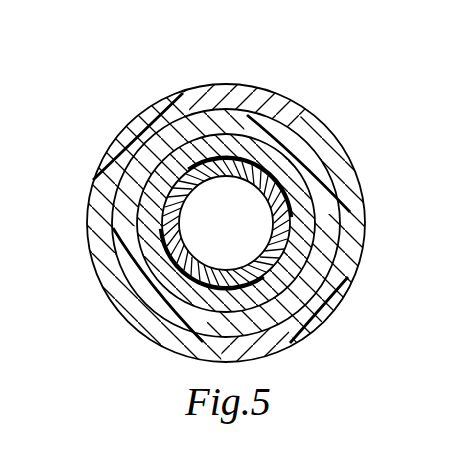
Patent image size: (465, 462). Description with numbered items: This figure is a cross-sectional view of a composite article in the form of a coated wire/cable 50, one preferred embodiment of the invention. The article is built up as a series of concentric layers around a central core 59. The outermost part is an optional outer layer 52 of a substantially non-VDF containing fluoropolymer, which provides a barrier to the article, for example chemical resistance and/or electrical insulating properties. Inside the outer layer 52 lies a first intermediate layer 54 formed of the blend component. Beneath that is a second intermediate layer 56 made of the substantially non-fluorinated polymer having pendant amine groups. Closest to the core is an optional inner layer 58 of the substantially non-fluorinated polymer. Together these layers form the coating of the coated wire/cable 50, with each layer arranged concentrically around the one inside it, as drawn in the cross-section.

The coated wire/cable 50 is at (321, 88).
The outer layer 52 is at (348, 265).
The first intermediate layer 54 is at (313, 282).
The second intermediate layer 56 is at (190, 155).
The inner layer 58 is at (208, 160).
The central conductor 59 is at (207, 235).